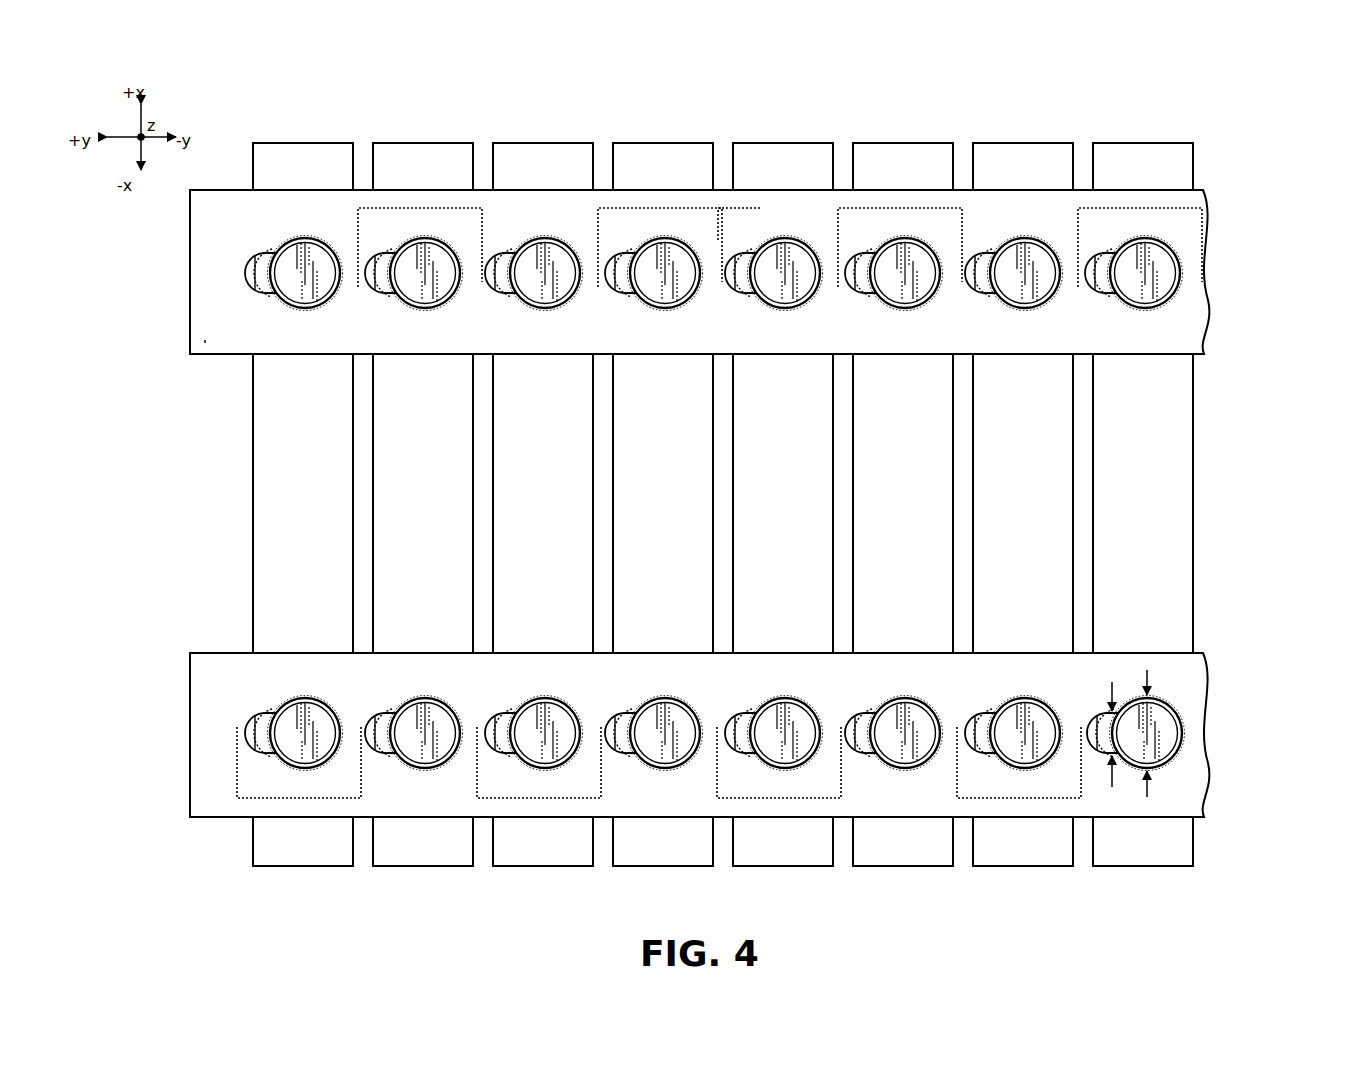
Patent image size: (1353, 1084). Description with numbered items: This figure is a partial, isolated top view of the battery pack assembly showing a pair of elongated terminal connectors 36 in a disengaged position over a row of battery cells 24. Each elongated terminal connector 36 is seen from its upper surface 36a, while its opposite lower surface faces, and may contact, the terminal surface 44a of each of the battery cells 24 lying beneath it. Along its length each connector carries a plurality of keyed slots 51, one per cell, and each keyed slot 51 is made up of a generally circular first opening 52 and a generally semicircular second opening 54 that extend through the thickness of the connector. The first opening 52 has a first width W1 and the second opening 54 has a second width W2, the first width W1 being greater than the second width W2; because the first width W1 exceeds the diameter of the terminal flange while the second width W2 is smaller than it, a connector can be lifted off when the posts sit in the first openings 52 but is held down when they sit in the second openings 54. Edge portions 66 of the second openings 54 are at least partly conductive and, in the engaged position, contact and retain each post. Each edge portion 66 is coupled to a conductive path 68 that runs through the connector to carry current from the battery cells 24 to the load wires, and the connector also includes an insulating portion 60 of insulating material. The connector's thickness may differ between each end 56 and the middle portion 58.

The battery cells 24 is at (818, 105).
The elongated terminal connectors 36 is at (1264, 234).
The upper surface 36a is at (230, 220).
The terminal surface 44a is at (322, 507).
The keyed slots 51 is at (1187, 751).
The first opening 52 is at (726, 490).
The second opening 54 is at (1104, 758).
The end 56 is at (187, 263).
The middle portion 58 is at (727, 207).
The insulating portion 60 is at (205, 342).
The edge portions 66 is at (1073, 711).
The conductive path 68 is at (425, 206).
The first width W1 is at (1167, 735).
The second width W2 is at (1114, 746).